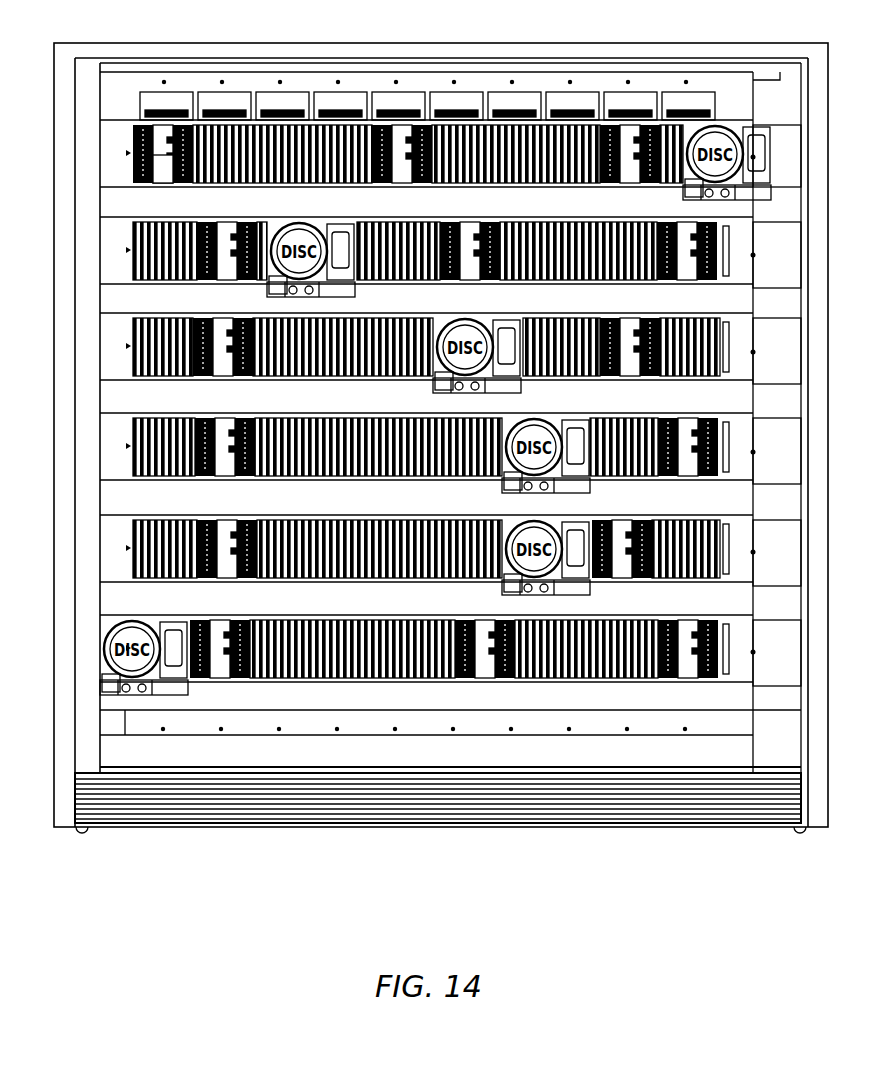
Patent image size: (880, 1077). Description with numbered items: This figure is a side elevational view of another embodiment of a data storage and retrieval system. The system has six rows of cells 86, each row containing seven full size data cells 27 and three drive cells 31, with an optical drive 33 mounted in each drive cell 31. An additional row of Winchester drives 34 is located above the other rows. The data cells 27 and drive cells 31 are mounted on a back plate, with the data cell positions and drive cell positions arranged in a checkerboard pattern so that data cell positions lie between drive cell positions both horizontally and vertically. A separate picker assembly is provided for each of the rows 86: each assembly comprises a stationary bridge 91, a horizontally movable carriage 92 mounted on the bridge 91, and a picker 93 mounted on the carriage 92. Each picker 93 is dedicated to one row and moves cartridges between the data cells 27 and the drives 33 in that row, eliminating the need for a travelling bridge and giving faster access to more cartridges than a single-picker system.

The data cell 27 is at (226, 175).
The drive cell 31 is at (163, 176).
The optical drive 33 is at (163, 130).
The Winchester drive 34 is at (288, 96).
The row of cells 86 is at (100, 167).
The stationary bridge 91 is at (795, 210).
The carriage 92 is at (686, 198).
The picker 93 is at (728, 133).